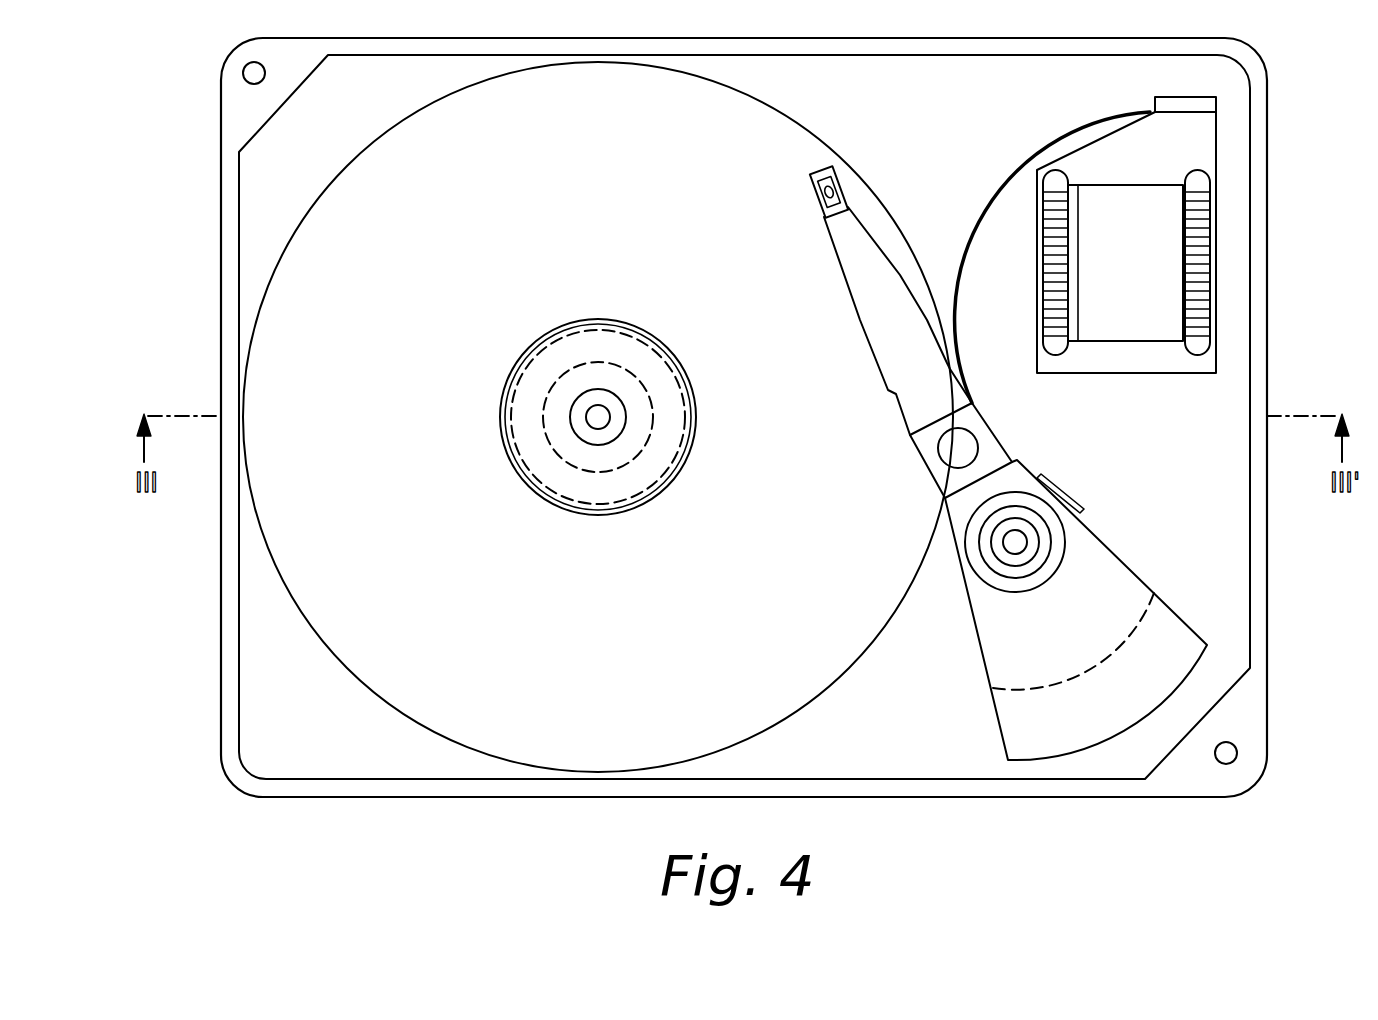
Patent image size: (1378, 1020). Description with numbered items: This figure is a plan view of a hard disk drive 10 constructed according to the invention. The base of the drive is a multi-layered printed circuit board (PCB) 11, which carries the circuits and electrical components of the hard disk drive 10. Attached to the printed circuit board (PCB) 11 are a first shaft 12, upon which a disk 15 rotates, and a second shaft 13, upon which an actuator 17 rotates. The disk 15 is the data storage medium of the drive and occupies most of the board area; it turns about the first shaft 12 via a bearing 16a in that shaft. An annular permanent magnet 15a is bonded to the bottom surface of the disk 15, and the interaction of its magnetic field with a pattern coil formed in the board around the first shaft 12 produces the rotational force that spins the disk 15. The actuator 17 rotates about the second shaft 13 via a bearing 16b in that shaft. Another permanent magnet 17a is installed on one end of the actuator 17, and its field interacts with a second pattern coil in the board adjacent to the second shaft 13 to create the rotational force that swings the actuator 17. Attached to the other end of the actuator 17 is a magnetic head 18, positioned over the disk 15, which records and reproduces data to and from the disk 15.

The hard disk drive 10 is at (163, 152).
The printed circuit board (PCB) 11 is at (339, 718).
The first shaft 12 is at (597, 413).
The second shaft 13 is at (1030, 556).
The disk 15 is at (440, 275).
The permanent magnet 15a is at (596, 498).
The bearing 16a is at (580, 430).
The bearing 16b is at (1018, 540).
The actuator 17 is at (900, 471).
The permanent magnet 17a is at (1018, 693).
The magnetic head 18 is at (822, 178).